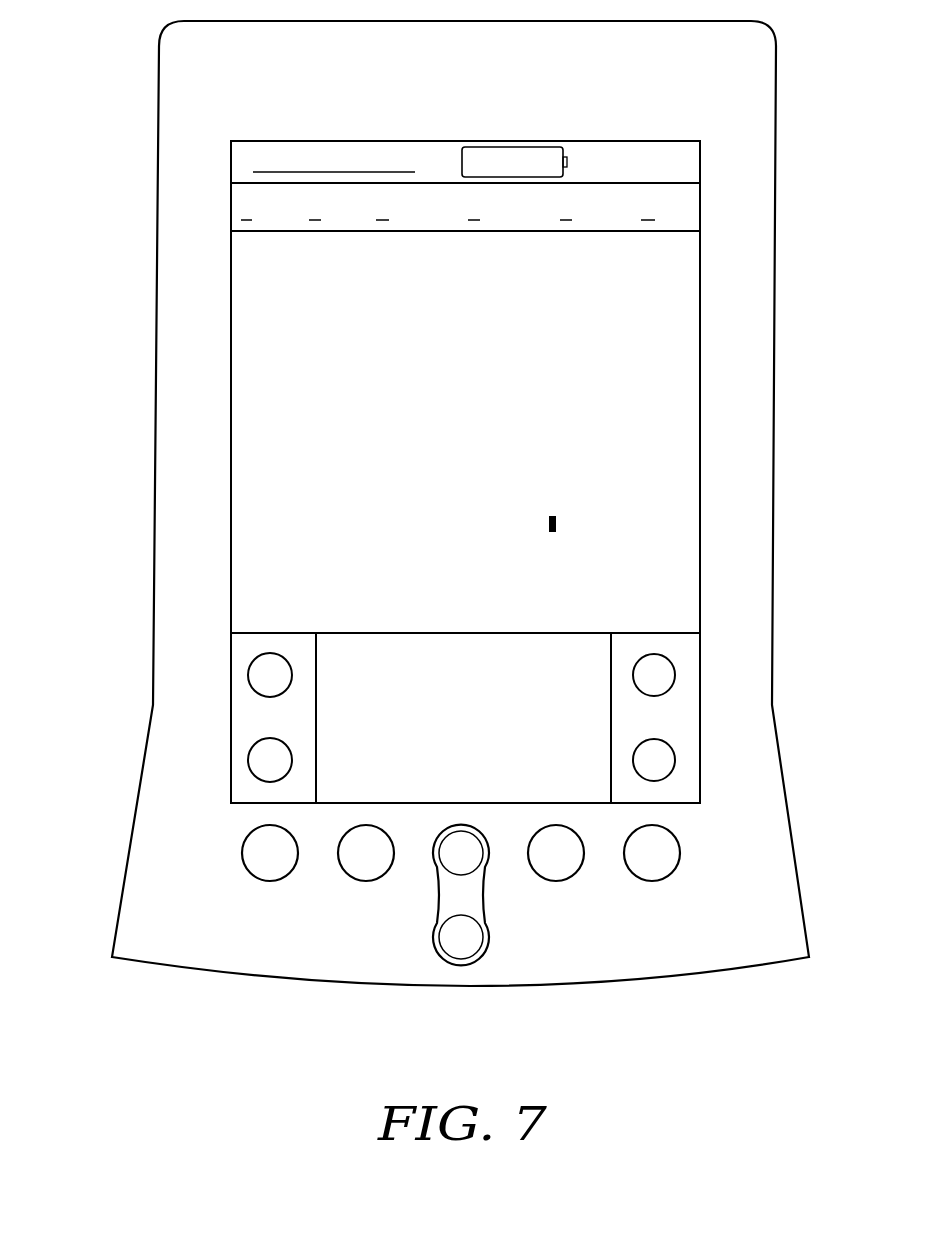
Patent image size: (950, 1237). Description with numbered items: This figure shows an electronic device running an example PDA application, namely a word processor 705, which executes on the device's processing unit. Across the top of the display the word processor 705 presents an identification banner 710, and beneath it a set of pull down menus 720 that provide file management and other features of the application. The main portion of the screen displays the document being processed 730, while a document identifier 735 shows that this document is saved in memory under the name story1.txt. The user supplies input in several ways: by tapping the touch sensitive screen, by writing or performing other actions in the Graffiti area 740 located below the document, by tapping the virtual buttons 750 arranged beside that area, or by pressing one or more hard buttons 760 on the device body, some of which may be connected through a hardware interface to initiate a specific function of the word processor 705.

The word processor 705 is at (156, 291).
The identification banner 710 is at (276, 141).
The set of pull down menus 720 is at (705, 203).
The document being processed 730 is at (668, 267).
The document identifier 735 is at (545, 588).
The Graffiti area 740 is at (519, 718).
The virtual buttons 750 is at (241, 706).
The hard buttons 760 is at (182, 863).